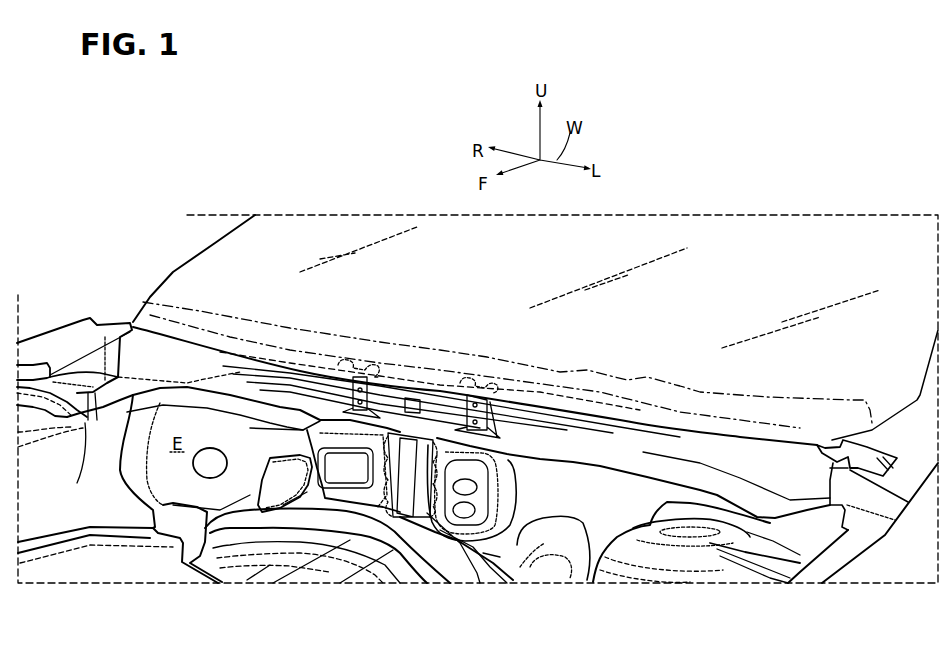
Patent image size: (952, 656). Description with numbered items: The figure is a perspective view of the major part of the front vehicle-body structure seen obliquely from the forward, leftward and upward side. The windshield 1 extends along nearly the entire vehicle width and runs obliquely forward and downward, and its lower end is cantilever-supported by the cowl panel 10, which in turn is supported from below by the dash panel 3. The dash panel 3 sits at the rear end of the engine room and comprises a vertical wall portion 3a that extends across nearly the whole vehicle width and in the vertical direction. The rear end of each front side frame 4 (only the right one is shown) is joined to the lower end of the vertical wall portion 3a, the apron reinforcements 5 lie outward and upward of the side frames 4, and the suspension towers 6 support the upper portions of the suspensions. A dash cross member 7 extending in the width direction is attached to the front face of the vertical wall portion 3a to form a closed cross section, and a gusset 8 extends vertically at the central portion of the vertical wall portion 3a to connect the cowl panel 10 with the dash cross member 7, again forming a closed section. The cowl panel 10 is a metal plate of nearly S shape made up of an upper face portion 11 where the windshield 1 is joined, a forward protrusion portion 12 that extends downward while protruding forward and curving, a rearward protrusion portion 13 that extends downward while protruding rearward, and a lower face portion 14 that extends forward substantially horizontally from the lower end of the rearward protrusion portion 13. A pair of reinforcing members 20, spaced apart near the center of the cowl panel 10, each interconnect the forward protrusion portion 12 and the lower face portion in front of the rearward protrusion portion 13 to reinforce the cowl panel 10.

The windshield 1 is at (190, 259).
The dash panel 3 is at (130, 497).
The vertical wall portion 3a is at (490, 567).
The front side frame 4 is at (50, 533).
The apron reinforcement 5 is at (53, 328).
The suspension tower 6 is at (37, 355).
The dash cross member 7 is at (310, 550).
The gusset 8 is at (400, 518).
The cowl panel 10 is at (561, 464).
The upper face portion 11 is at (423, 343).
The forward protrusion portion 12 is at (583, 400).
The rearward protrusion portion 13 is at (663, 442).
The lower face portion 14 is at (593, 457).
The reinforcing member 20 is at (285, 416).